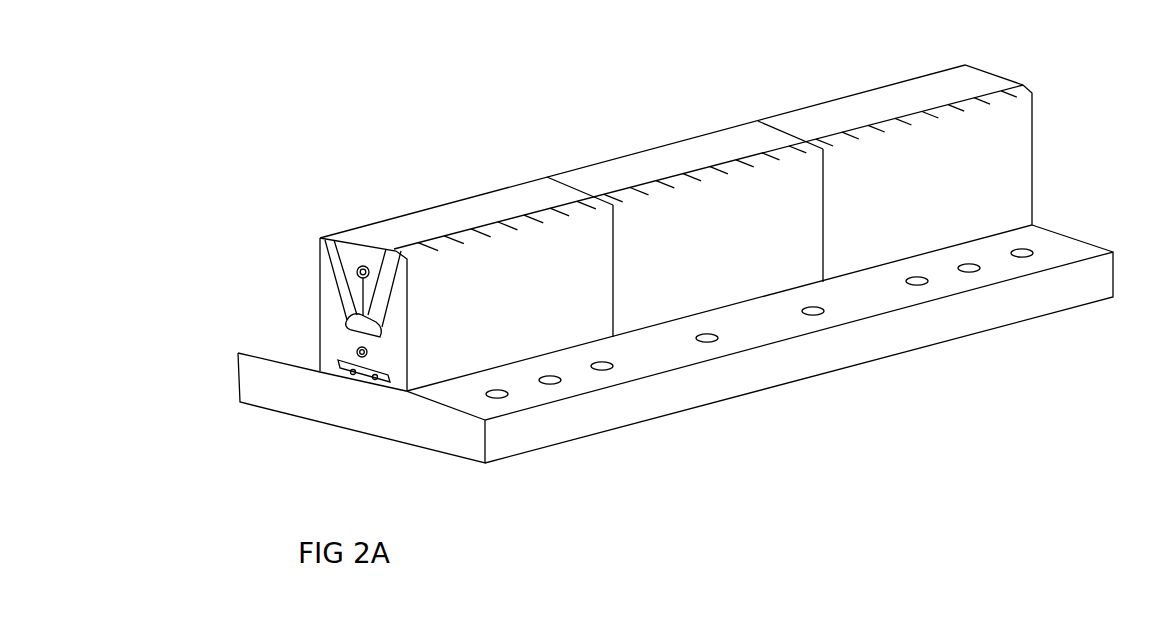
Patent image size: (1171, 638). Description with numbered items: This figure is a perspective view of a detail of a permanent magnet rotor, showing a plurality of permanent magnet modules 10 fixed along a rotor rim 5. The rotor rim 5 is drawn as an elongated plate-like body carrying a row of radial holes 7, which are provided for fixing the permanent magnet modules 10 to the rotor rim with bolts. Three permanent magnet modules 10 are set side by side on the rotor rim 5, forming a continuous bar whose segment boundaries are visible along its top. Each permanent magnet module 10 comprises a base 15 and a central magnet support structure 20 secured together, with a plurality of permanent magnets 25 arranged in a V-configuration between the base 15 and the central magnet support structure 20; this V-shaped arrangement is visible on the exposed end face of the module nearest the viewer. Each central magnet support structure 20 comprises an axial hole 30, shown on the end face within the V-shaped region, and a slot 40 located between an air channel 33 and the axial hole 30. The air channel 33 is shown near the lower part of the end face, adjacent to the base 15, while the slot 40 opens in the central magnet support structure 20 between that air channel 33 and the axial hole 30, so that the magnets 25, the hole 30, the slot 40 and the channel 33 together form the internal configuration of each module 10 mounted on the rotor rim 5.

The rotor rim 5 is at (238, 352).
The radial holes 7 is at (508, 393).
The permanent magnet module 10 is at (498, 171).
The base 15 is at (320, 350).
The central magnet support structure 20 is at (440, 220).
The permanent magnets 25 is at (418, 254).
The axial hole 30 is at (366, 264).
The air channel 33 is at (347, 328).
The slot 40 is at (355, 283).